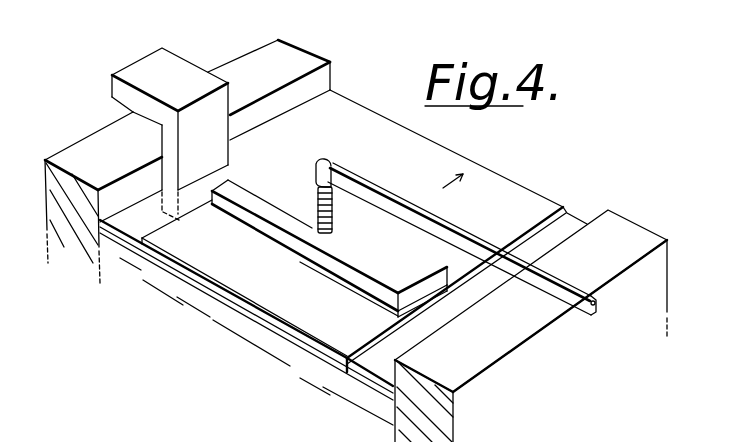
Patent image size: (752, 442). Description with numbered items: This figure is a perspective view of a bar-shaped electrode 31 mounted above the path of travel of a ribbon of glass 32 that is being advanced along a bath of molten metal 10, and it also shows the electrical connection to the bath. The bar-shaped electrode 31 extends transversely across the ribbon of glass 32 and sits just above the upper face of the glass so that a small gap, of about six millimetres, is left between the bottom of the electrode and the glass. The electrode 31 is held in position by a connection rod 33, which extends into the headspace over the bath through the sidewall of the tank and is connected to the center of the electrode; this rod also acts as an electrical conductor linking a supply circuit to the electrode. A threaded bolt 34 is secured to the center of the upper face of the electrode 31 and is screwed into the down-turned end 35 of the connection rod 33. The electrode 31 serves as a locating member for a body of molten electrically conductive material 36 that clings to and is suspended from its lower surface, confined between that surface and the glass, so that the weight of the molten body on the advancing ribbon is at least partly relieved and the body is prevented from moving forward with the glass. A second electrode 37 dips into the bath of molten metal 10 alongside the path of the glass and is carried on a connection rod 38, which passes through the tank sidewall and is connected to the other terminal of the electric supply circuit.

The bath of molten metal 10 is at (360, 368).
The bar-shaped electrode 31 is at (317, 267).
The ribbon of glass 32 is at (287, 310).
The connection rod 33 is at (397, 203).
The threaded bolt 34 is at (295, 239).
The down-turned end 35 is at (332, 163).
The body of molten electrically conductive material 36 is at (375, 293).
The second electrode 37 is at (210, 117).
The connection rod 38 is at (123, 92).